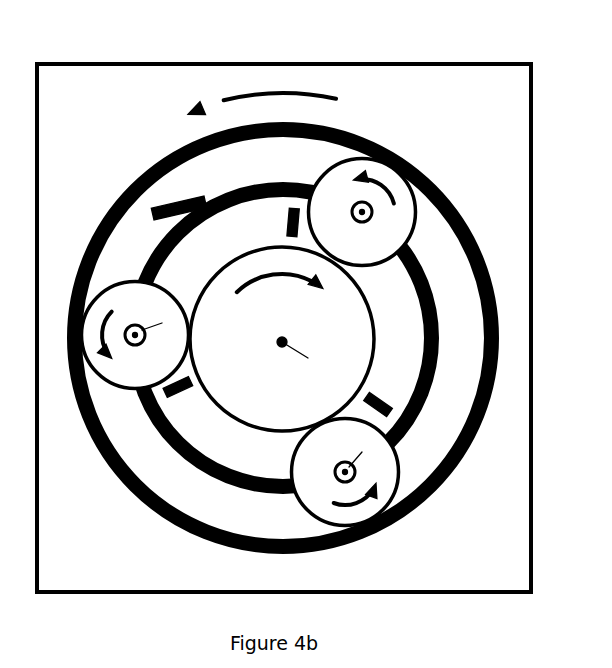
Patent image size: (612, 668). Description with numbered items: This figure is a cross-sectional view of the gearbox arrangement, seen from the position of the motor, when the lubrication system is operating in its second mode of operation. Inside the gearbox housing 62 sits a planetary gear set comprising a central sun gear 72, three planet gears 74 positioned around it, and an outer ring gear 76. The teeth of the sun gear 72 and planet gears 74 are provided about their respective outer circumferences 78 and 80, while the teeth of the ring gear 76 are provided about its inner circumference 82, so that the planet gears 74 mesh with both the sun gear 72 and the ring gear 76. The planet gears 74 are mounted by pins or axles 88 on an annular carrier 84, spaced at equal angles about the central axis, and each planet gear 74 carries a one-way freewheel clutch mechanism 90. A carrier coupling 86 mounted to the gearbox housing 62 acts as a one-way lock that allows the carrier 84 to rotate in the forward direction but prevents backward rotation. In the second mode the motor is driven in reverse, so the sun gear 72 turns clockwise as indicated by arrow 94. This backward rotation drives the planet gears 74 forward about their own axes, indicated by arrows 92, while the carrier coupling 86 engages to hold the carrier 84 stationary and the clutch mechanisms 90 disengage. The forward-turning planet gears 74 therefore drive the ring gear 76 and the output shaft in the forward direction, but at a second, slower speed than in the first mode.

The gearbox housing 62 is at (463, 63).
The sun gear 72 is at (296, 357).
The planet gears 74 is at (275, 319).
The ring gear 76 is at (283, 338).
The outer circumference of the sun gear 78 is at (257, 430).
The outer circumference of the planet gear 80 is at (103, 383).
The inner circumference of the ring gear 82 is at (295, 137).
The annular carrier 84 is at (428, 297).
The carrier coupling 86 is at (182, 201).
The pins or axles 88 is at (132, 343).
The clutch mechanism 90 is at (286, 223).
The arrows 92 is at (240, 95).
The arrow 94 is at (258, 278).